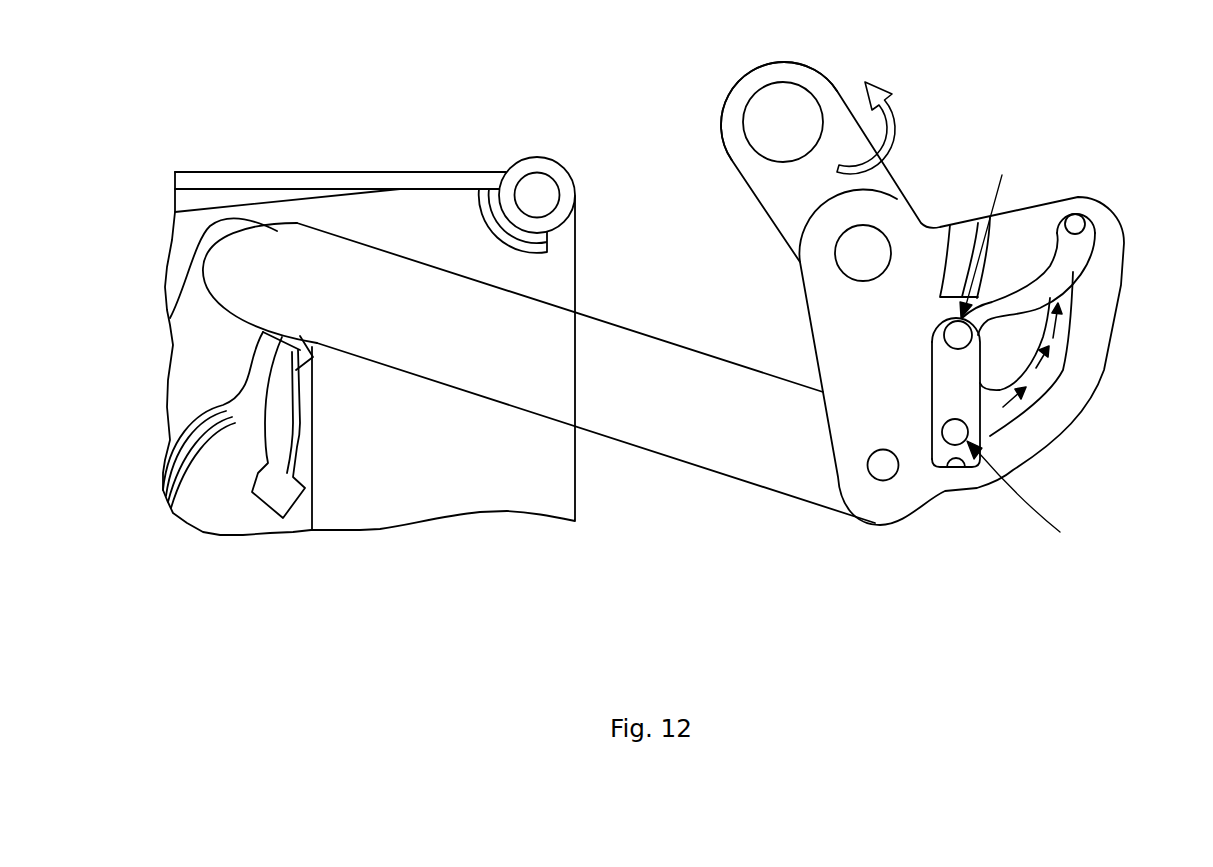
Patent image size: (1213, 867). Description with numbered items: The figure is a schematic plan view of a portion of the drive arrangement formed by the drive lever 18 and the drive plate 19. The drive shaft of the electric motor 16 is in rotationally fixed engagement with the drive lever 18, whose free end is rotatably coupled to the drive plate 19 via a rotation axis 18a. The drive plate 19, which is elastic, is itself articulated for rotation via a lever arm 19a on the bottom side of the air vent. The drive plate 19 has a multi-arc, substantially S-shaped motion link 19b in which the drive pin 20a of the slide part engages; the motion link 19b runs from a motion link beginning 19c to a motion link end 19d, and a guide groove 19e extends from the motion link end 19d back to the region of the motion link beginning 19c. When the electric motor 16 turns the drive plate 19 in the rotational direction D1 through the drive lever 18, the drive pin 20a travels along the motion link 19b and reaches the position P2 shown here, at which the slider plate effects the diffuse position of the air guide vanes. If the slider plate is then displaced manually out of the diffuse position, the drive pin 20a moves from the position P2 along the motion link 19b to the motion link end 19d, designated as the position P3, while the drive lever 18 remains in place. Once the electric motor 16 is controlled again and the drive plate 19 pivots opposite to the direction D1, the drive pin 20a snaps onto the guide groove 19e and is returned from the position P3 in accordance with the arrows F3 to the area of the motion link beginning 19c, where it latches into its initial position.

The electric motor 16 is at (456, 473).
The drive lever 18 is at (572, 375).
The rotation axis 18a is at (884, 481).
The drive plate 19 is at (881, 417).
The lever arm 19a is at (818, 200).
The motion link 19b is at (933, 395).
The motion link beginning 19c is at (1058, 208).
The motion link end 19d is at (957, 470).
The guide groove 19e is at (1055, 360).
The drive pin 20a is at (946, 337).
The position P2 is at (988, 231).
The position P3 is at (1031, 499).
The rotational direction D1 is at (890, 110).
The arrows F3 is at (1055, 328).